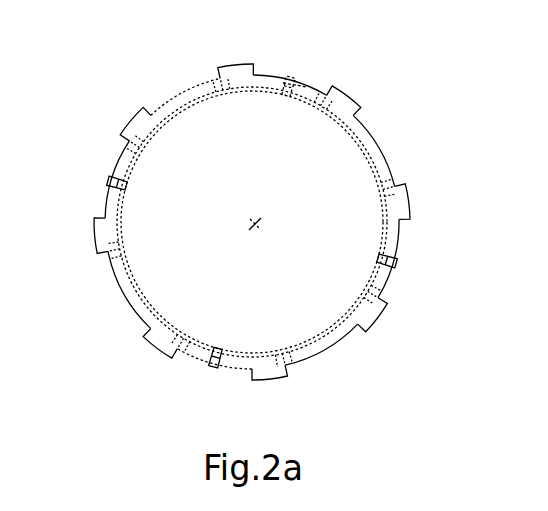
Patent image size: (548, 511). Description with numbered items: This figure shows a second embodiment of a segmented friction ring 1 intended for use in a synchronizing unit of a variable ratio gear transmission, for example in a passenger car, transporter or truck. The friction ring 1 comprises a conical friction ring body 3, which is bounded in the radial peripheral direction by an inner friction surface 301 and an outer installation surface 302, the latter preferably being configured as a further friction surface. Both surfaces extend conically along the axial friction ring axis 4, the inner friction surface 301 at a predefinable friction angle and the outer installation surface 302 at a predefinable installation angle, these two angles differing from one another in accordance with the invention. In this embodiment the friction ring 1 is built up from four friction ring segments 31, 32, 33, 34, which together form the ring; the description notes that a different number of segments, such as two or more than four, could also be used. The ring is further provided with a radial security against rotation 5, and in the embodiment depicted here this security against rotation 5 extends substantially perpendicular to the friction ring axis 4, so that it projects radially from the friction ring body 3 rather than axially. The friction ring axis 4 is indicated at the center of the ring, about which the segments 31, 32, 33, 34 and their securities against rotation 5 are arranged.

The friction ring 1 is at (147, 100).
The friction ring body 3 is at (252, 255).
The friction ring axis 4 is at (262, 224).
The security against rotation 5 is at (234, 64).
The friction ring segment 31 is at (186, 100).
The friction ring segment 32 is at (364, 136).
The friction ring segment 33 is at (130, 293).
The friction ring segment 34 is at (338, 334).
The inner friction surface 301 is at (191, 103).
The outer installation surface 302 is at (304, 84).